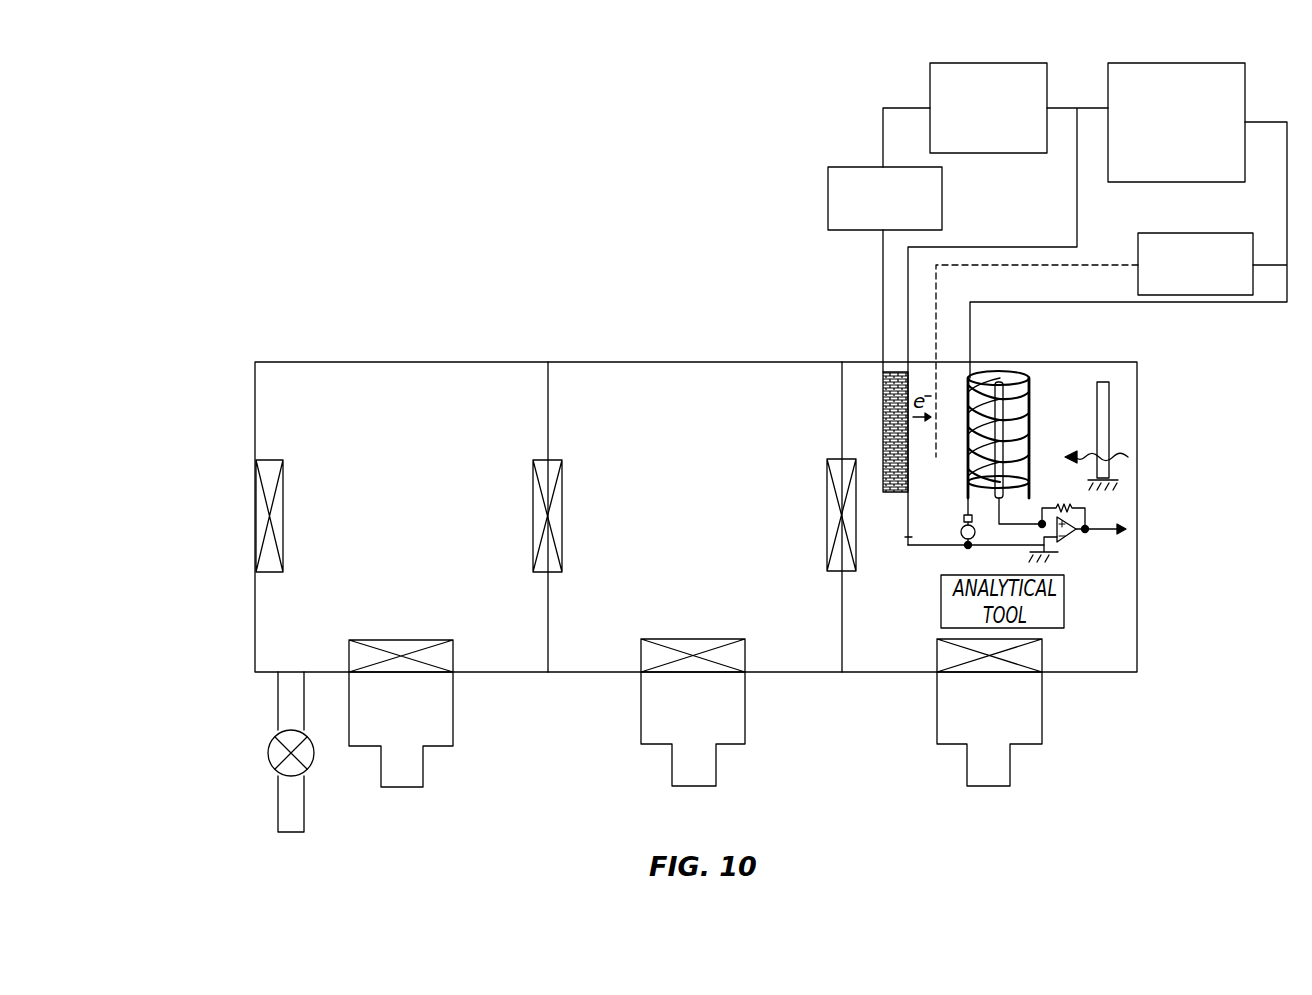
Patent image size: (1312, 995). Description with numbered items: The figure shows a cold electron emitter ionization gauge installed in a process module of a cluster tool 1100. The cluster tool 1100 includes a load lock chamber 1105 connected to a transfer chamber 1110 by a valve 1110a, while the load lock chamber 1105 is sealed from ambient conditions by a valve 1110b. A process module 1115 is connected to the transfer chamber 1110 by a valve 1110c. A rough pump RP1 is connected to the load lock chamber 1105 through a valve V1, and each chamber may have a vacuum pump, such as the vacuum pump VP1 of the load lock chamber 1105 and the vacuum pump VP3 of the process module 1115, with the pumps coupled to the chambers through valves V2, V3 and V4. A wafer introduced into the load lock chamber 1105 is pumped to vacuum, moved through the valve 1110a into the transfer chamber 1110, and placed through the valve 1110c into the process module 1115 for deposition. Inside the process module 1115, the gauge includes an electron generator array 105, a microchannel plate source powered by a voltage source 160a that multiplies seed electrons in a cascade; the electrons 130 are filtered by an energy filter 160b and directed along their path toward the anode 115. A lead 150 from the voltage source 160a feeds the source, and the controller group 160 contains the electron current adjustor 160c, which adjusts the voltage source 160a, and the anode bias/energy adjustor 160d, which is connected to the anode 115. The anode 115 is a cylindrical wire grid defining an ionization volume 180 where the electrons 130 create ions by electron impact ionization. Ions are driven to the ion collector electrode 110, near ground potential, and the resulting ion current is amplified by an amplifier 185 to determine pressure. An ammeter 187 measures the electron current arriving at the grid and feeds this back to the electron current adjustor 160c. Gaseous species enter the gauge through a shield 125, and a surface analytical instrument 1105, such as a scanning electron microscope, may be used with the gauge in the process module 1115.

The cluster tool 1100 is at (433, 175).
The load lock chamber 1105 is at (386, 362).
The transfer chamber 1110 is at (678, 362).
The process module 1115 is at (1137, 585).
The valve 1110a is at (556, 510).
The valve 1110b is at (280, 510).
The valve 1110c is at (832, 512).
The electron generator array 105 is at (883, 403).
The ion collector electrode 110 is at (997, 371).
The anode 115 is at (1017, 417).
The shield 125 is at (1109, 425).
The electrons 130 is at (920, 380).
The filament lead 150 is at (883, 272).
The controller 160 is at (1077, 212).
The voltage source 160a is at (853, 167).
The energy filter 160b is at (1198, 233).
The electron current adjustor 160c is at (988, 63).
The anode bias/energy adjustor 160d is at (1178, 63).
The ionization volume 180 is at (1015, 383).
The amplifier 185 is at (1068, 540).
The ammeter 187 is at (961, 537).
The valve V1 is at (272, 752).
The valve V2 is at (401, 638).
The valve V3 is at (694, 638).
The valve V4 is at (937, 655).
The rough pump RP1 is at (268, 742).
The vacuum pump VP1 is at (401, 729).
The vacuum pump VP3 is at (693, 729).